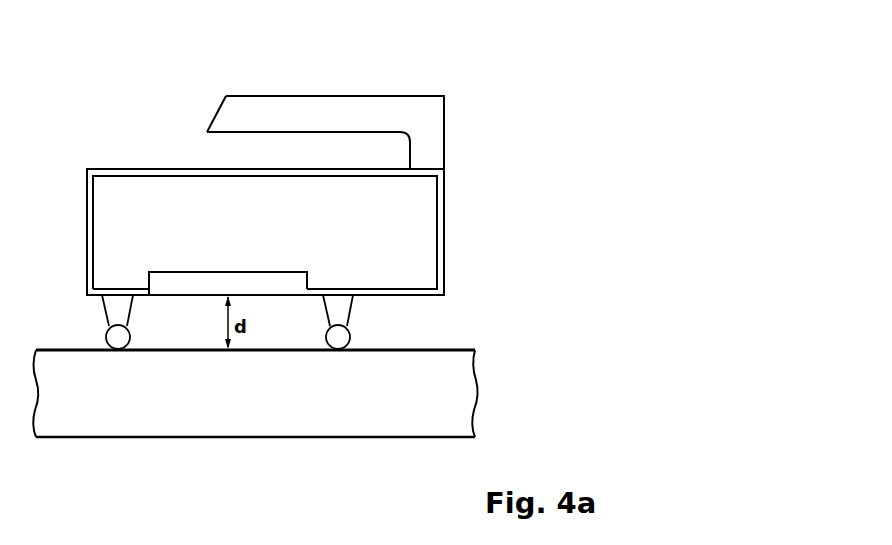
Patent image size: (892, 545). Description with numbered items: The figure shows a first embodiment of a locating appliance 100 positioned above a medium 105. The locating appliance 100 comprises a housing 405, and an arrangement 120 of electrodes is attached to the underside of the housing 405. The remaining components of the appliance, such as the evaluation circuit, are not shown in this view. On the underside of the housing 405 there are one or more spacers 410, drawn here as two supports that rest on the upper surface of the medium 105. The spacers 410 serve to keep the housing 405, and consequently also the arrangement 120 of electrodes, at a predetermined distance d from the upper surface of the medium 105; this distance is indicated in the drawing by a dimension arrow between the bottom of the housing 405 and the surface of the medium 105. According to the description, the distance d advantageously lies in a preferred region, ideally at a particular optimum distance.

The locating appliance 100 is at (517, 77).
The medium 105 is at (210, 425).
The arrangement of electrodes 120 is at (293, 273).
The housing 405 is at (437, 228).
The spacers 410 is at (352, 315).